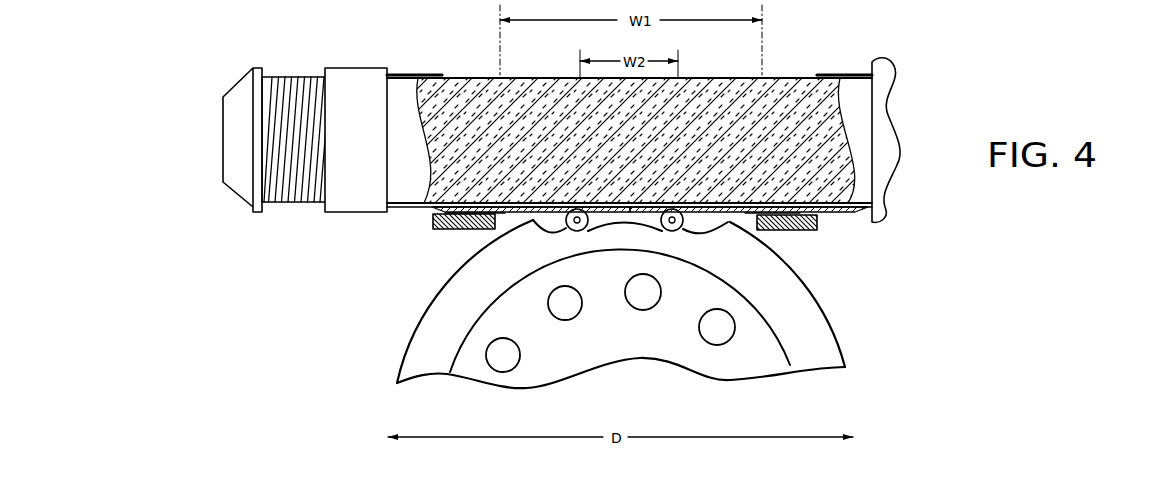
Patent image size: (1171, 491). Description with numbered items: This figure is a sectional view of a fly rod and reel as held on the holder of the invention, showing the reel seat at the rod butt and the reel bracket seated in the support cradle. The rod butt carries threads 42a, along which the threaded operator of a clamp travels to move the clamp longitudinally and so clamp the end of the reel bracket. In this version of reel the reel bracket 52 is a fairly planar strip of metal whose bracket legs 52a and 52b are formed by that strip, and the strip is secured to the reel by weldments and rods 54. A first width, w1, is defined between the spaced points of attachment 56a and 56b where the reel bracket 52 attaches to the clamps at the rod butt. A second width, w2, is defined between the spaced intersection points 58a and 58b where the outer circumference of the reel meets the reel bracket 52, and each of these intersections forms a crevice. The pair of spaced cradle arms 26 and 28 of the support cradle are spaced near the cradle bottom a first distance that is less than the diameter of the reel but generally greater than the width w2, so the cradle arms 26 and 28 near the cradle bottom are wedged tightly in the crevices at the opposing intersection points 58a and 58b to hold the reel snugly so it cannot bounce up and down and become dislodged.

The cradle arm 26 is at (823, 235).
The cradle arm 28 is at (447, 232).
The threads 42a is at (300, 203).
The reel bracket 52 is at (480, 235).
The bracket leg 52a is at (505, 215).
The bracket leg 52b is at (703, 219).
The rods 54 is at (583, 234).
The point of attachment 56a is at (508, 208).
The point of attachment 56b is at (750, 212).
The intersection point 58a is at (540, 218).
The intersection point 58b is at (748, 218).